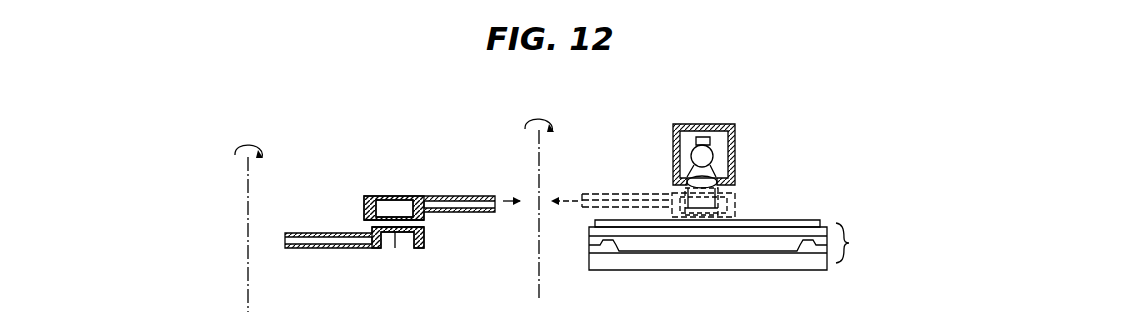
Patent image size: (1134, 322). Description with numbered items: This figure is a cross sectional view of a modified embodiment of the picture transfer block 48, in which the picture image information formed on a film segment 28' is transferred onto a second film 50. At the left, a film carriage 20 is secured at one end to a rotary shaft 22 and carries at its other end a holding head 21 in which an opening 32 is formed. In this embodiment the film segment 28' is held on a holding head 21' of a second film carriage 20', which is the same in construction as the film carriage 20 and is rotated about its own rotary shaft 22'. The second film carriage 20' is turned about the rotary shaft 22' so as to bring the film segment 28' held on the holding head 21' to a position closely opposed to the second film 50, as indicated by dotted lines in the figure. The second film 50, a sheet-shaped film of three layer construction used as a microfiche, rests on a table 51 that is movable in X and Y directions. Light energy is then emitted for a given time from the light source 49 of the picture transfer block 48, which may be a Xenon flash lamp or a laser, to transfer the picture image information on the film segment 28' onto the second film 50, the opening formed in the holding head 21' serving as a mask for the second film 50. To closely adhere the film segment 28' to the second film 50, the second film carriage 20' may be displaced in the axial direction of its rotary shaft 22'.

The rotary shaft 22 is at (274, 225).
The rotary shaft 22' is at (567, 205).
The film carriage 20 is at (354, 266).
The second film carriage 20' is at (549, 181).
The holding head 21 is at (423, 252).
The holding head 21' is at (575, 186).
The film segment 28' is at (358, 205).
The opening 32 is at (395, 235).
The picture transfer block 48 is at (727, 96).
The light source 49 is at (713, 153).
The second film 50 is at (799, 218).
The table 51 is at (737, 246).